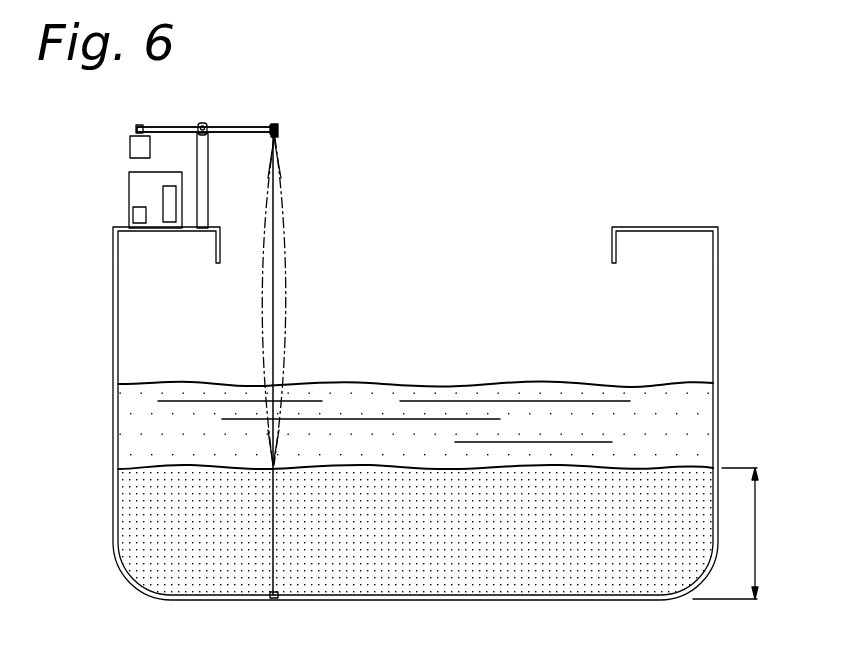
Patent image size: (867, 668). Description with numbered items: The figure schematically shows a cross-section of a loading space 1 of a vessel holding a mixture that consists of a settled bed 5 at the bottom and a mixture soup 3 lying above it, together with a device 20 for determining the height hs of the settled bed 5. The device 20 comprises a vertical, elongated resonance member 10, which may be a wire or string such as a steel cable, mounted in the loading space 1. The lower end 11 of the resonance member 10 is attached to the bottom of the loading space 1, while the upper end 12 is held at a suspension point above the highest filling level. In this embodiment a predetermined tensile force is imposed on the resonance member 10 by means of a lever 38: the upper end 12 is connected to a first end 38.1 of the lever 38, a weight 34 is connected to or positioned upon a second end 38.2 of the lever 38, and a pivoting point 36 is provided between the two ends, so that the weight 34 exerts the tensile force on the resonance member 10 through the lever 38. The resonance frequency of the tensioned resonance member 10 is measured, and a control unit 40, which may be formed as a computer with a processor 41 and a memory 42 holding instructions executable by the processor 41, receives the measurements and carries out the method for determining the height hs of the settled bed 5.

The loading space 1 is at (556, 198).
The mixture soup 3 is at (688, 425).
The settled bed 5 is at (577, 548).
The resonance member 10 is at (277, 226).
The lower end 11 is at (276, 600).
The upper end 12 is at (279, 136).
The device 20 is at (290, 112).
The weight 34 is at (136, 147).
The pivoting point 36 is at (207, 135).
The lever 38 is at (182, 128).
The first end 38.1 is at (273, 128).
The second end 38.2 is at (137, 125).
The control unit 40 is at (135, 185).
The processor 41 is at (138, 215).
The memory 42 is at (165, 204).
The height of the settled bed hs is at (740, 533).